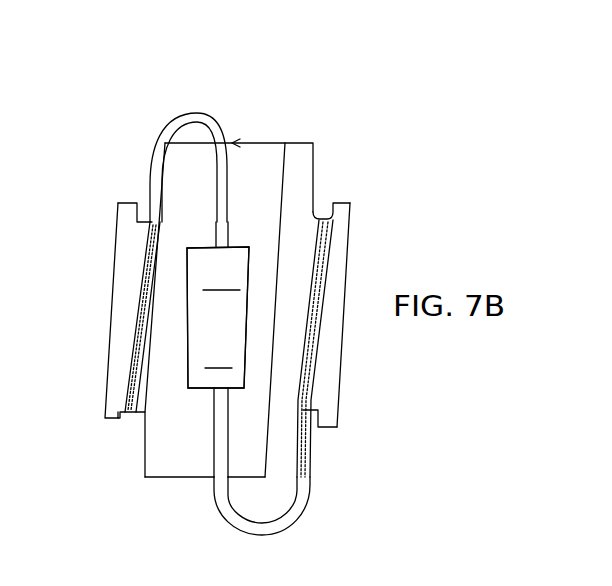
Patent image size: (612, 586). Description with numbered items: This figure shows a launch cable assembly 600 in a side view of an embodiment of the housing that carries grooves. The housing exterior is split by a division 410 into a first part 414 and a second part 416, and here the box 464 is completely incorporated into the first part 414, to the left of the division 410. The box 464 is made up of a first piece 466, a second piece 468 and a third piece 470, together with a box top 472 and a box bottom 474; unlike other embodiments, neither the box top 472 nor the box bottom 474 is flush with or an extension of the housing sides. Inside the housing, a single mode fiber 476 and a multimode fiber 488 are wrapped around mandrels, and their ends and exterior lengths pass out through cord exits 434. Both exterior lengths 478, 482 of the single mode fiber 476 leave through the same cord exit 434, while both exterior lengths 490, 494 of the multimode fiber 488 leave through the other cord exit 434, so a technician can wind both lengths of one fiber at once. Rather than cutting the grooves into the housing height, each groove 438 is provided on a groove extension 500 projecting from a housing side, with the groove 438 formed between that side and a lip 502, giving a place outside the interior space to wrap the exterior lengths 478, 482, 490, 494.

The launch cable assembly 600 is at (80, 392).
The division 410 is at (284, 165).
The first part 414 is at (183, 468).
The second part 416 is at (302, 157).
The cord exit 434 is at (212, 245).
The groove 438 is at (326, 207).
The box 464 is at (218, 317).
The first piece 466 is at (197, 394).
The second piece 468 is at (218, 354).
The third piece 470 is at (236, 245).
The box top 472 is at (187, 323).
The box bottom 474 is at (249, 300).
The single mode fiber 476 is at (280, 523).
The exterior length of single mode fiber 478 is at (250, 523).
The exterior length of single mode fiber 482 is at (243, 487).
The multimode fiber 488 is at (178, 118).
The exterior length of multimode fiber 490 is at (192, 118).
The exterior length of multimode fiber 494 is at (224, 153).
The groove extension 500 is at (332, 389).
The lip 502 is at (334, 428).